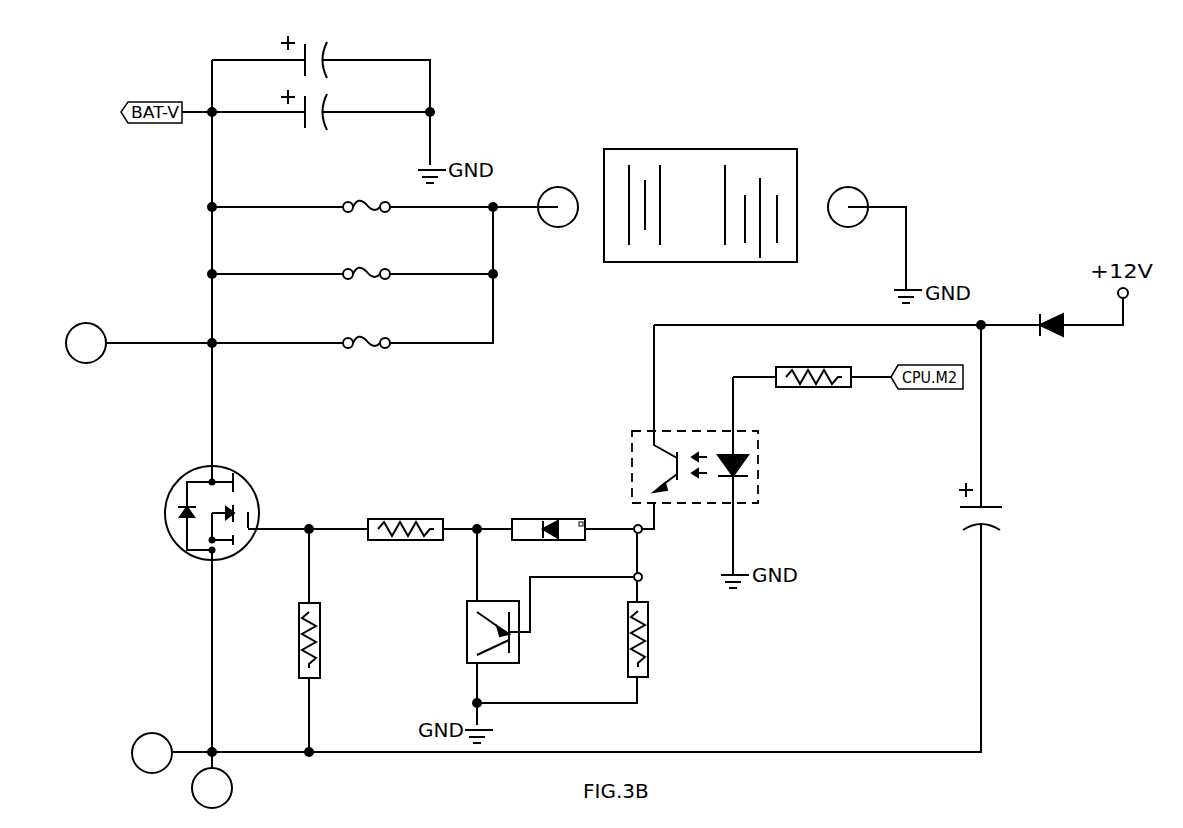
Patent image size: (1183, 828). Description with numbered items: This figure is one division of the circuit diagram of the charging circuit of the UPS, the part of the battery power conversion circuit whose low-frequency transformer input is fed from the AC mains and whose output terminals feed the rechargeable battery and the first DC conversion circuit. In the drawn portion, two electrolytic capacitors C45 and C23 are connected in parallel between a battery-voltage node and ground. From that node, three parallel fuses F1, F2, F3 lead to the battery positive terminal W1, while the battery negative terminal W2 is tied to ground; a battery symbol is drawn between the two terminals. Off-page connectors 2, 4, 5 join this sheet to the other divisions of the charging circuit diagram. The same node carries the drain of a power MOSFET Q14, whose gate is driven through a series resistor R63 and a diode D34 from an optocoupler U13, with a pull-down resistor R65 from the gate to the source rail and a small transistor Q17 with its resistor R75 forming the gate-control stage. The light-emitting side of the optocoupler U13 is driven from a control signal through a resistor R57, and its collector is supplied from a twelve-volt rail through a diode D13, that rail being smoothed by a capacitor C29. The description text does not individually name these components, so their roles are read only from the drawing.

The off-page connector 2 is at (86, 343).
The off-page connector 4 is at (152, 753).
The off-page connector 5 is at (212, 788).
The capacitor 2200uF/35V C45 is at (325, 44).
The capacitor 2200uF/35V C23 is at (319, 123).
The fuse F40A/32VDC F1 is at (364, 207).
The fuse F40A/32VDC F2 is at (364, 273).
The fuse F40A/32VDC F3 is at (364, 341).
The battery positive wire terminal W1 is at (574, 191).
The battery negative wire terminal W2 is at (847, 191).
The diode 1N4148 D13 is at (1052, 328).
The resistor 1.5K R57 is at (814, 377).
The optocoupler 10101C U13 is at (731, 477).
The capacitor 47uF/50V C29 is at (980, 513).
The MOSFET IRF3205 Q14 is at (251, 508).
The resistor 47 ohm R63 is at (400, 530).
The diode 1N4148WSM D34 is at (561, 531).
The resistor 10K R65 is at (383, 641).
The transistor 2907SM Q17 is at (460, 633).
The resistor 20K R75 is at (640, 641).